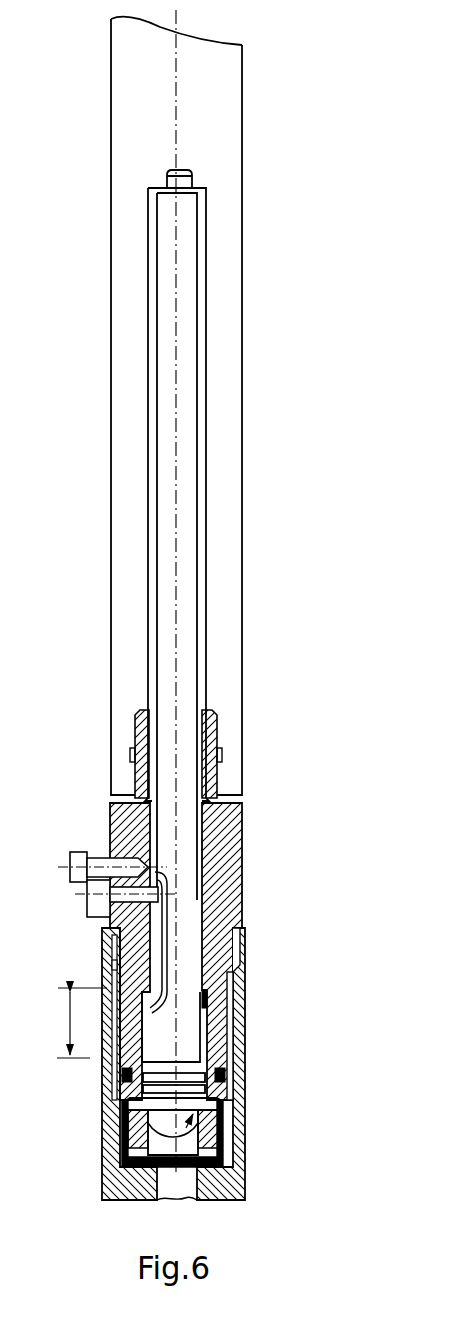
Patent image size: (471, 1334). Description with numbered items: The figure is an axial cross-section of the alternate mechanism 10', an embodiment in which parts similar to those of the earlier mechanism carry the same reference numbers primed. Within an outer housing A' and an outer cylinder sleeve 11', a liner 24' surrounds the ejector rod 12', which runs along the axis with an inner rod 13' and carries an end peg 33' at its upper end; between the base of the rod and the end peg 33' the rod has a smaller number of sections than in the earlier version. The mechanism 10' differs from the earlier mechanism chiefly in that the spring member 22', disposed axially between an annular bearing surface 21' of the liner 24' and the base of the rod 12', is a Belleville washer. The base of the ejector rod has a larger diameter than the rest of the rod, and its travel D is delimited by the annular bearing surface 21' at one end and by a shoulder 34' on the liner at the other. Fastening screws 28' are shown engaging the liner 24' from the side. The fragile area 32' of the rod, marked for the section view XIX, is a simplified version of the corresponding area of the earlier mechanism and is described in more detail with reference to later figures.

The mechanism 10' is at (364, 760).
The outer cylinder sleeve 11' is at (241, 1064).
The rod 12' is at (242, 494).
The piston rod 13' is at (252, 546).
The annular bearing surface 21' is at (231, 1113).
The spring member 22' is at (131, 1073).
The liner 24' is at (223, 951).
The fastening screws 28' is at (92, 932).
The fragile area 32' is at (115, 754).
The end peg 33' is at (241, 145).
The shoulder 34' is at (257, 1014).
The outer housing tube A' is at (221, 406).
The travel D is at (76, 1023).
The section line indicator XIX is at (245, 729).